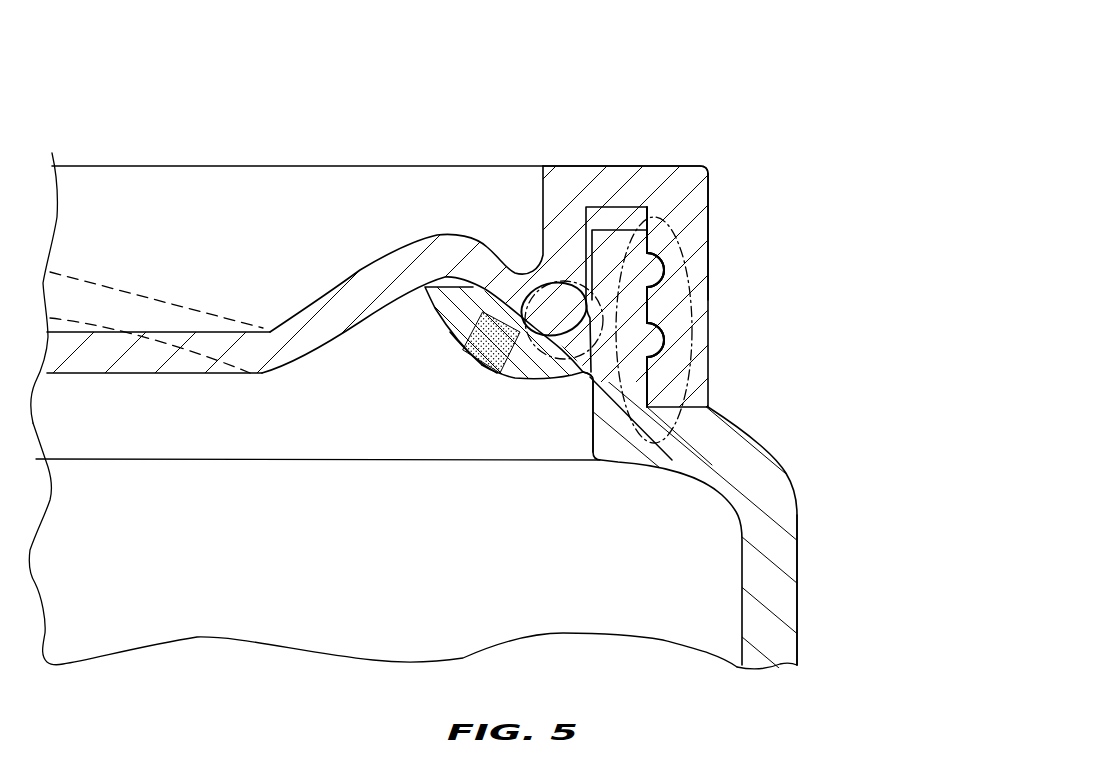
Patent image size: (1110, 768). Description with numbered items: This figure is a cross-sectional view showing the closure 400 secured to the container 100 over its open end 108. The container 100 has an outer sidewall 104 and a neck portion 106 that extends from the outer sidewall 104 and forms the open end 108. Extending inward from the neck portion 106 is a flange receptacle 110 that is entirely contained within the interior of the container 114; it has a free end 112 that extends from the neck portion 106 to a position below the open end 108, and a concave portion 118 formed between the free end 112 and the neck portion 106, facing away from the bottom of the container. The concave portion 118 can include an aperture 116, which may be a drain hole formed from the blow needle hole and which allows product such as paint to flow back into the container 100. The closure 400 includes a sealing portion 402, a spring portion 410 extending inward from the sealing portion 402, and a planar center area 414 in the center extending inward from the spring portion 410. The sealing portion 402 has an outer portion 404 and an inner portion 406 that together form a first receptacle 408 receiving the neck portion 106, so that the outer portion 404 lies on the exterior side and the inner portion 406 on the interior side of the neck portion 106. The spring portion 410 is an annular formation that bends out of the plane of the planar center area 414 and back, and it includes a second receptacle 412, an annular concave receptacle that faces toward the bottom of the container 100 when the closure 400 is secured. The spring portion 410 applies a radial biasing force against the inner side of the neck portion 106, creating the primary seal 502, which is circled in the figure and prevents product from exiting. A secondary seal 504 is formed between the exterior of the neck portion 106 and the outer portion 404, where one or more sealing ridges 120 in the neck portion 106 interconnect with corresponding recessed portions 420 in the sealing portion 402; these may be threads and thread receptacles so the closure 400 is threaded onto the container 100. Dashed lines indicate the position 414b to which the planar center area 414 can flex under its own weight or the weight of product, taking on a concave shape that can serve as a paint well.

The container 100 is at (840, 508).
The outer sidewall 104 is at (800, 587).
The neck portion 106 is at (590, 375).
The open end 108 is at (117, 203).
The flange receptacle 110 is at (557, 380).
The free end 112 is at (447, 342).
The interior of the container 114 is at (165, 620).
The aperture 116 is at (488, 352).
The concave portion 118 is at (597, 328).
The sealing ridge 120 is at (665, 260).
The closure 400 is at (787, 68).
The sealing portion 402 is at (618, 185).
The outer portion 404 is at (698, 296).
The inner portion 406 is at (555, 187).
The first receptacle 408 is at (683, 180).
The spring portion 410 is at (449, 258).
The second receptacle 412 is at (452, 312).
The planar center area 414 is at (105, 357).
The flexed position of planar center area 414b is at (138, 293).
The recessed portion 420 is at (688, 274).
The primary seal 502 is at (527, 272).
The secondary seal 504 is at (632, 437).